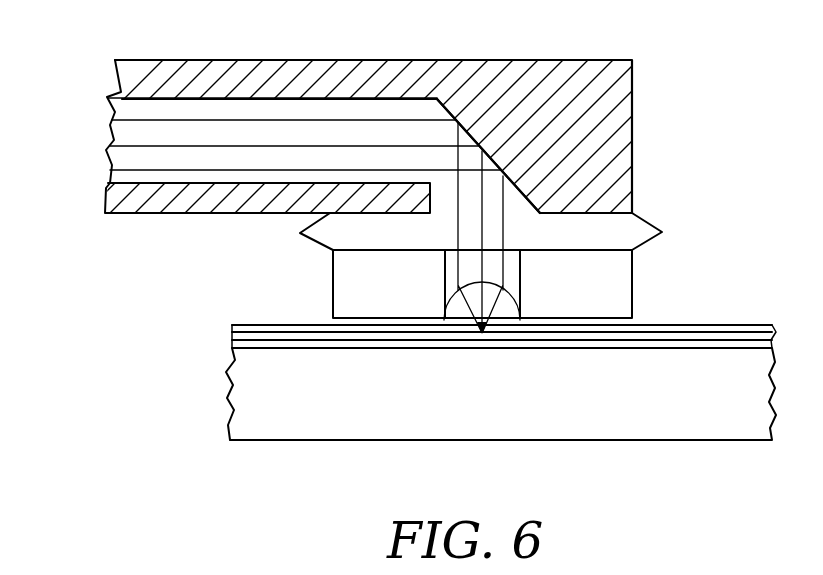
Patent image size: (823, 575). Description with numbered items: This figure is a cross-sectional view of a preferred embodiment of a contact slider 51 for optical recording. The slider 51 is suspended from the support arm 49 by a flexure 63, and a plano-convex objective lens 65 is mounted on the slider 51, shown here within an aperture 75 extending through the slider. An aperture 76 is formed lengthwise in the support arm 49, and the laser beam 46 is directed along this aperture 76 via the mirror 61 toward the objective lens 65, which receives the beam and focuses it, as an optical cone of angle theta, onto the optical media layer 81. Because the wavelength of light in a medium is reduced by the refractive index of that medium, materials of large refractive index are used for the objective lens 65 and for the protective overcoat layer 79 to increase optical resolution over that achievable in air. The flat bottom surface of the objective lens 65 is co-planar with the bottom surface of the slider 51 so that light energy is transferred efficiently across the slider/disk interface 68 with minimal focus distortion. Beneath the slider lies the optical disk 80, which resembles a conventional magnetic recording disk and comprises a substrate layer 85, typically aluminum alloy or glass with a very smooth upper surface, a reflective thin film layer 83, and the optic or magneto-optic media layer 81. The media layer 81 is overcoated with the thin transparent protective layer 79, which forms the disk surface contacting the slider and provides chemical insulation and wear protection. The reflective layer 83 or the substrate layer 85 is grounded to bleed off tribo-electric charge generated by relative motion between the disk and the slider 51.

The support arm 49 is at (555, 60).
The mirror 61 is at (502, 151).
The aperture 76 is at (113, 110).
The laser beam 46 is at (112, 148).
The flexure 63 is at (640, 222).
The aperture 75 is at (510, 260).
The contact slider 51 is at (333, 285).
The plano-convex objective lens 65 is at (526, 305).
The slider/disk interface 68 is at (637, 322).
The protective overcoat layer 79 is at (234, 328).
The optical media layer 81 is at (232, 333).
The reflective thin film layer 83 is at (232, 340).
The substrate layer 85 is at (228, 405).
The optical disk 80 is at (464, 414).